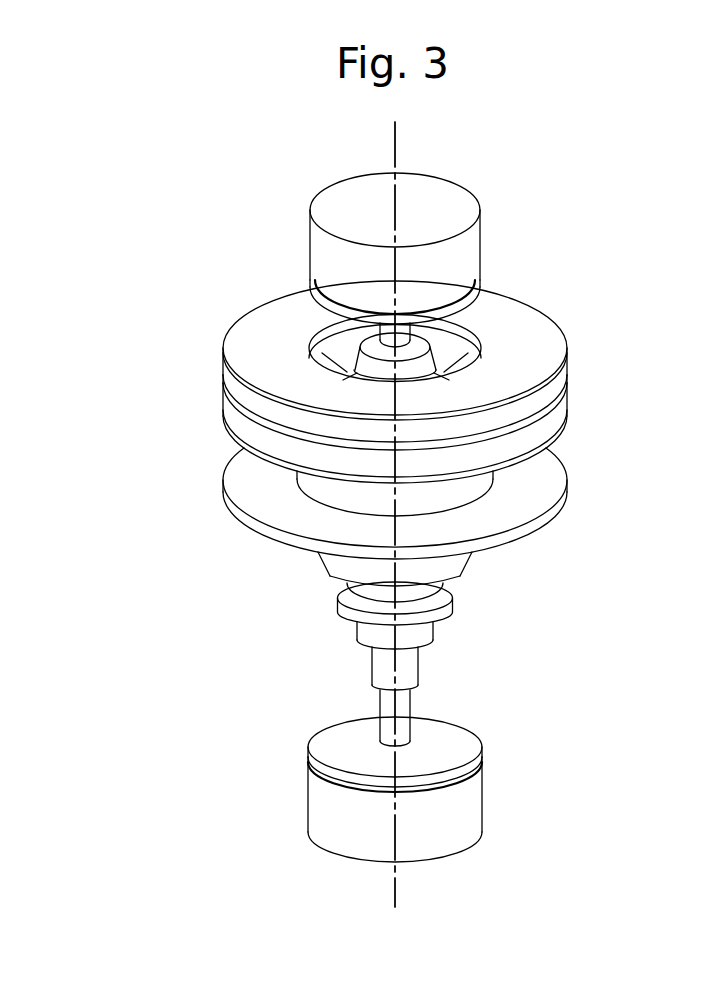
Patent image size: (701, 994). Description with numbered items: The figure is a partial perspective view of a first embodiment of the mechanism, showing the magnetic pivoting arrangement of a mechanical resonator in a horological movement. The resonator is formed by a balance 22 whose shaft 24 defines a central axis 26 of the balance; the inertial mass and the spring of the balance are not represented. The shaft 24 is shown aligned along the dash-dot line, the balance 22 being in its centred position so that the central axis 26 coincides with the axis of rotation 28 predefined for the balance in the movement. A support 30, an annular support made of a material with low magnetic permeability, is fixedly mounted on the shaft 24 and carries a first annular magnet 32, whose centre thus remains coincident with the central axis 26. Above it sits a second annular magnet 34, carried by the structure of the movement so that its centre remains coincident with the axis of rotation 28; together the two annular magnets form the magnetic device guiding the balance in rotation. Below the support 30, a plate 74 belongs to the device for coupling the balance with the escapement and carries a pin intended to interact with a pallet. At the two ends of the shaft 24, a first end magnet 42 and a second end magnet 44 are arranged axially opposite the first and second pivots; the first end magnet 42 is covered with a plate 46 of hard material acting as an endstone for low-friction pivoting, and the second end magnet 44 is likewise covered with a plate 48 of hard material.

The balance 22 is at (255, 620).
The shaft 24 is at (410, 595).
The central axis 26 is at (392, 152).
The axis of rotation 28 is at (392, 892).
The support 30 is at (548, 425).
The first annular magnet 32 is at (548, 388).
The second annular magnet 34 is at (548, 353).
The first end magnet 42 is at (468, 255).
The second end magnet 44 is at (458, 807).
The plate 46 is at (472, 308).
The plate 48 is at (455, 748).
The plate 74 is at (534, 502).